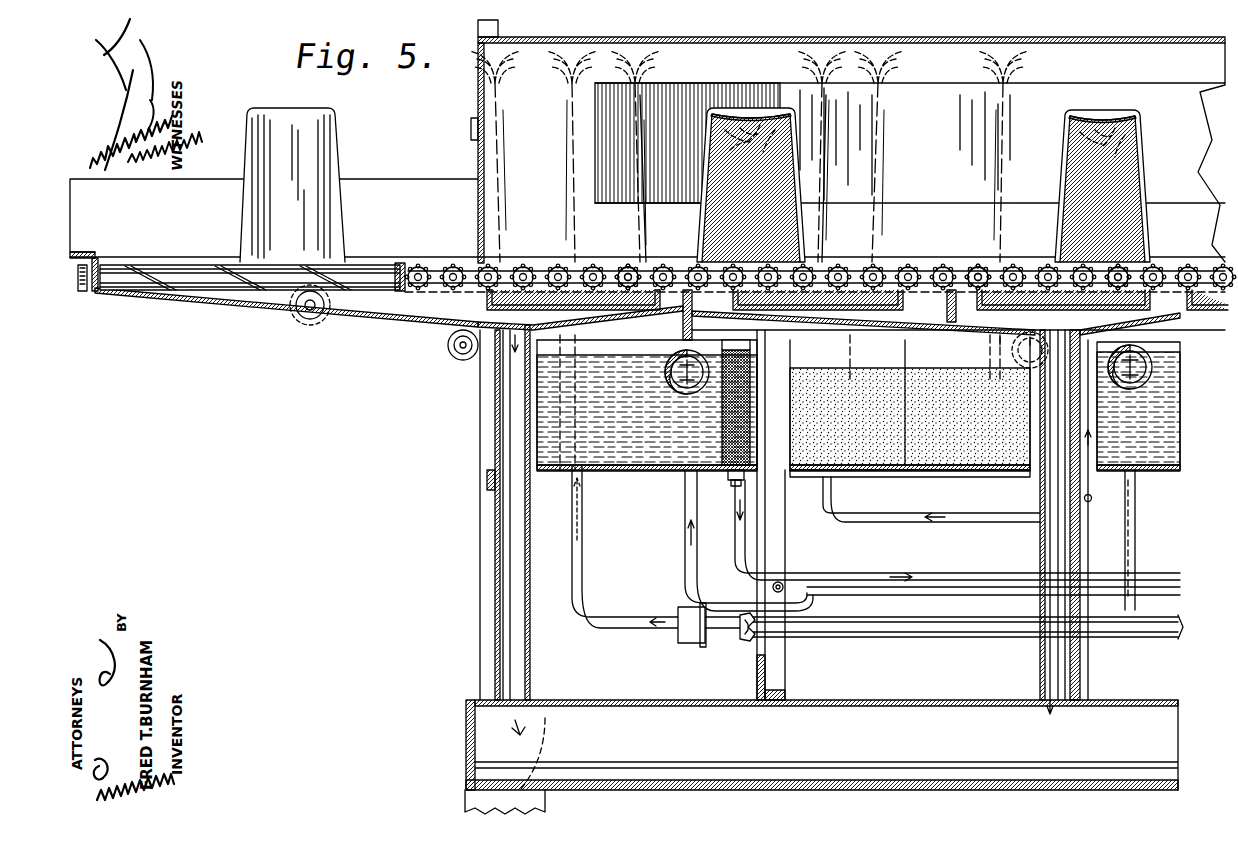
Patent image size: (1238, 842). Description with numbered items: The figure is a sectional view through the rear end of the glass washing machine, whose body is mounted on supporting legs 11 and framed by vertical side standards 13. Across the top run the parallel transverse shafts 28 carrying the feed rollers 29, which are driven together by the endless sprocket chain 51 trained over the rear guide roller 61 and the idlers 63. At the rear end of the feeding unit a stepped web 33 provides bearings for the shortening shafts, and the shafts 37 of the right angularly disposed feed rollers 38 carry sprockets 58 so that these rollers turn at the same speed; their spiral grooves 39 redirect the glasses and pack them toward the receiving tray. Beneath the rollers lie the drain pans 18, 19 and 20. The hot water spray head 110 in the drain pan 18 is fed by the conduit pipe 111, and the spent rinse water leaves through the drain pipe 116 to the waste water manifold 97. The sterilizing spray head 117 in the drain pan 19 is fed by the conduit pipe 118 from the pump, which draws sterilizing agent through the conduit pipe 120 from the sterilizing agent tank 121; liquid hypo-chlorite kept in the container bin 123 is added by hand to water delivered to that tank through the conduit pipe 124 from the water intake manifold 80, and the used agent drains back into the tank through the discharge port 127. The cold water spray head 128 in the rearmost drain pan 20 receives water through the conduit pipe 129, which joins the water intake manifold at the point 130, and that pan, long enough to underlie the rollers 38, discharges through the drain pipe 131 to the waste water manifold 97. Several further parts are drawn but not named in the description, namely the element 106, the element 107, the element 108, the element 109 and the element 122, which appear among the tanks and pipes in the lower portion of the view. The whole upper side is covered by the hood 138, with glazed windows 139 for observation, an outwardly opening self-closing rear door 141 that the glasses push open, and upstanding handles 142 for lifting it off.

The supporting legs 11 is at (472, 797).
The vertical side standards 13 is at (779, 678).
The drain pan 18 is at (975, 266).
The drain pan 19 is at (922, 300).
The drain pan 20 is at (430, 330).
The shafts 28 is at (625, 266).
The feed rollers 29 is at (668, 266).
The stepped web 33 is at (402, 268).
The shafts 37 is at (98, 292).
The feed rollers 38 is at (190, 272).
The spiral grooves 39 is at (250, 292).
The endless sprocket chain 51 is at (375, 332).
The sprockets 58 is at (81, 292).
The guide roller 61 is at (306, 322).
The idlers 63 is at (463, 361).
The water intake manifold 80 is at (850, 638).
The waste water manifold 97 is at (808, 755).
The filter bed bottom 106 is at (920, 468).
The drain pipe 107 is at (1136, 496).
The supply pipe in tank 108 is at (1162, 358).
The liquid tank 109 is at (1182, 381).
The hot water spray head 110 is at (1104, 268).
The conduit pipe 111 is at (990, 340).
The drain pipe 116 is at (1062, 538).
The sterilizing spray head 117 is at (850, 270).
The conduit pipe 118 is at (827, 494).
The conduit pipe 120 is at (846, 573).
The sterilizing agent tank 121 is at (626, 468).
The filter screen 122 is at (718, 452).
The container bin 123 is at (910, 403).
The conduit pipe 124 is at (749, 540).
The discharge port 127 is at (690, 333).
The spray head 128 is at (532, 292).
The conduit pipe 129 is at (584, 582).
The point 130 is at (748, 640).
The drain pipe 131 is at (527, 565).
The hood 138 is at (950, 57).
The glazed windows 139 is at (1180, 92).
The door 141 is at (477, 160).
The handles 142 is at (478, 30).